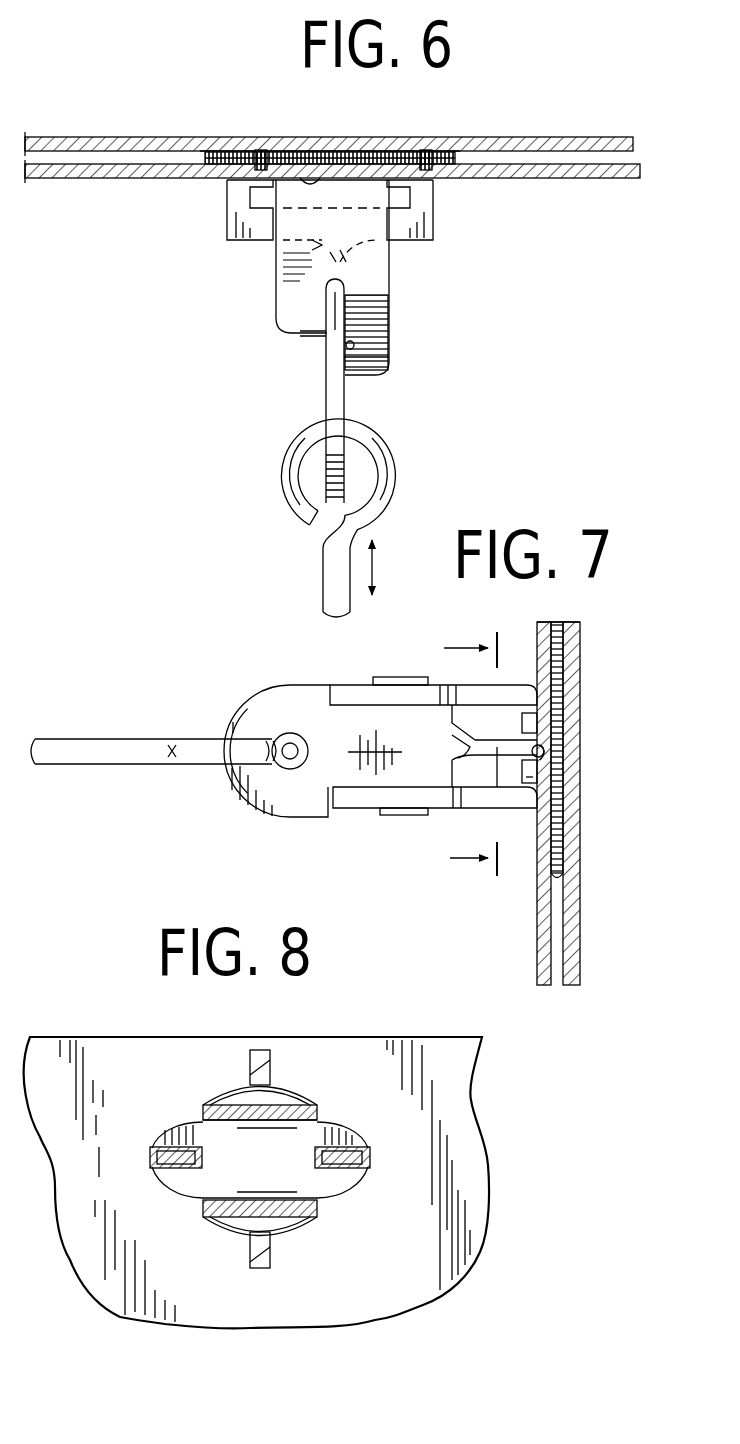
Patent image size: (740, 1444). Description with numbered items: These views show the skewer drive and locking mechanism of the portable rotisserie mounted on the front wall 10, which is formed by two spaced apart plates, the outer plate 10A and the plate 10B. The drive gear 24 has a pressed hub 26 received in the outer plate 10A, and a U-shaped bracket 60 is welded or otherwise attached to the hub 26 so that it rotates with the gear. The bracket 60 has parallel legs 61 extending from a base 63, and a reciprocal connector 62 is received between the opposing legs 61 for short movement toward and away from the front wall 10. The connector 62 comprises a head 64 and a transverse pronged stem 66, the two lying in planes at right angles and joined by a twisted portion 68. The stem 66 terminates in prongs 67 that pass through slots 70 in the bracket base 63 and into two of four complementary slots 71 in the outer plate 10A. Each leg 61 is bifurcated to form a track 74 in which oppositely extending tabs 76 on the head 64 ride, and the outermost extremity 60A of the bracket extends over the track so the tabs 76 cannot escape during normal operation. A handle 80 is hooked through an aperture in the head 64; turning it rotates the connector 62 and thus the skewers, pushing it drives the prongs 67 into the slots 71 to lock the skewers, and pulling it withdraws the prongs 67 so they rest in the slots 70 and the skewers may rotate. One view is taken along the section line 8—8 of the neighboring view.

In FIG. 6, the front wall 10 is at (620, 182).
In FIG. 7, the front wall 10 is at (534, 934).
In FIG. 8, the front wall 10 is at (496, 1260).
In FIG. 6, the outer plate 10A is at (522, 180).
In FIG. 7, the outer plate 10A is at (555, 943).
In FIG. 8, the outer plate 10A is at (473, 1167).
In FIG. 6, the plate 10B is at (578, 136).
In FIG. 7, the plate 10B is at (578, 746).
In FIG. 6, the drive gear 24 is at (458, 160).
In FIG. 7, the drive gear 24 is at (560, 874).
In FIG. 6, the hub 26 is at (312, 176).
In FIG. 8, the hub 26 is at (228, 1093).
In FIG. 6, the U-shaped bracket 60 is at (274, 292).
In FIG. 7, the U-shaped bracket 60 is at (504, 684).
In FIG. 8, the U-shaped bracket 60 is at (314, 1222).
In FIG. 6, the outermost extremity of the bracket 60A is at (344, 363).
In FIG. 7, the outermost extremity of the bracket 60A is at (347, 810).
In FIG. 6, the bracket leg 61 is at (393, 325).
In FIG. 7, the bracket leg 61 is at (470, 685).
In FIG. 8, the bracket leg 61 is at (290, 1093).
In FIG. 6, the reciprocal connector 62 is at (323, 392).
In FIG. 7, the reciprocal connector 62 is at (298, 686).
In FIG. 7, the bracket base 63 is at (562, 700).
In FIG. 8, the bracket base 63 is at (260, 1159).
In FIG. 6, the head 64 is at (334, 412).
In FIG. 7, the head 64 is at (258, 806).
In FIG. 6, the pronged stem 66 is at (432, 240).
In FIG. 7, the pronged stem 66 is at (497, 760).
In FIG. 6, the prongs 67 is at (240, 206).
In FIG. 7, the prongs 67 is at (550, 728).
In FIG. 8, the prongs 67 is at (156, 1162).
In FIG. 6, the twisted portion 68 is at (280, 250).
In FIG. 7, the twisted portion 68 is at (468, 738).
In FIG. 7, the slots 70 is at (555, 752).
In FIG. 8, the slots 70 is at (166, 1147).
In FIG. 6, the slots 71 is at (262, 158).
In FIG. 7, the slots 71 is at (548, 760).
In FIG. 8, the slots 71 is at (250, 1050).
In FIG. 6, the track 74 is at (330, 316).
In FIG. 6, the tabs 76 is at (347, 298).
In FIG. 7, the tabs 76 is at (397, 677).
In FIG. 6, the handle 80 is at (334, 575).
In FIG. 7, the handle 80 is at (132, 752).
In FIG. 7, the section line 8- 8 is at (454, 756).